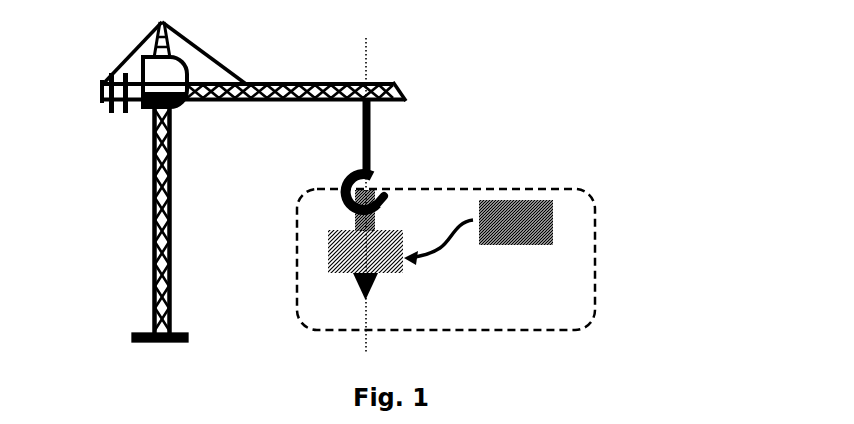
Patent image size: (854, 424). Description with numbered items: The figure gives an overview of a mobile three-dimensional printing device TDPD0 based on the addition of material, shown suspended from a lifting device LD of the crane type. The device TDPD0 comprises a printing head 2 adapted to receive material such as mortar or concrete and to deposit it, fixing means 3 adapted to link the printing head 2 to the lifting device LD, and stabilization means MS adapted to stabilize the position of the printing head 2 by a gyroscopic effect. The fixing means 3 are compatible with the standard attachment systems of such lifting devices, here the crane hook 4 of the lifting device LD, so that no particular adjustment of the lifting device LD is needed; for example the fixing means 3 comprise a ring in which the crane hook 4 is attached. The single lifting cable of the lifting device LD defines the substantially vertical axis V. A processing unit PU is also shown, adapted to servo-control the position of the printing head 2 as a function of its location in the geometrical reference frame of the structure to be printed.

The printing head 2 is at (374, 285).
The fixing means 3 is at (372, 193).
The crane hook 4 is at (341, 186).
The lifting device LD is at (152, 192).
The vertical axis V is at (367, 40).
The mobile three-dimensional printing device TDPD0 is at (580, 190).
The stabilization means MS is at (365, 251).
The processing unit PU is at (478, 232).